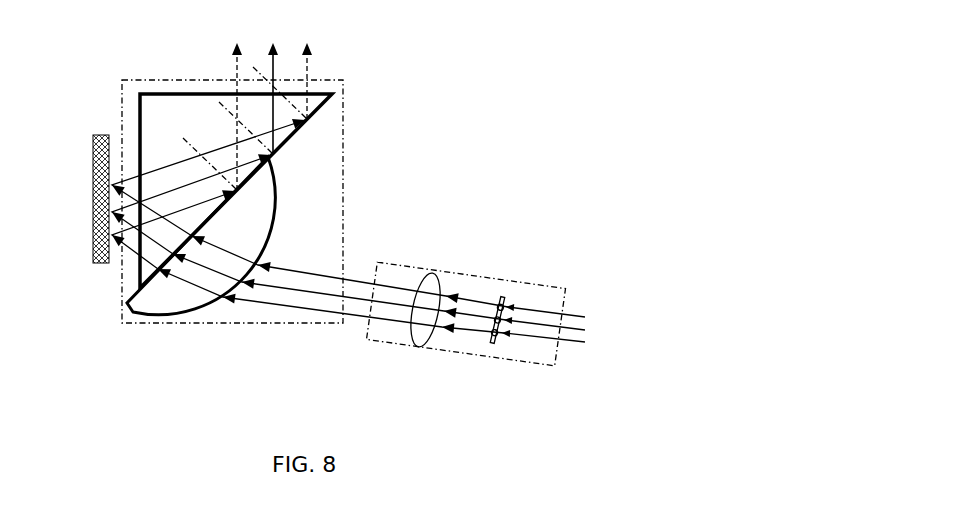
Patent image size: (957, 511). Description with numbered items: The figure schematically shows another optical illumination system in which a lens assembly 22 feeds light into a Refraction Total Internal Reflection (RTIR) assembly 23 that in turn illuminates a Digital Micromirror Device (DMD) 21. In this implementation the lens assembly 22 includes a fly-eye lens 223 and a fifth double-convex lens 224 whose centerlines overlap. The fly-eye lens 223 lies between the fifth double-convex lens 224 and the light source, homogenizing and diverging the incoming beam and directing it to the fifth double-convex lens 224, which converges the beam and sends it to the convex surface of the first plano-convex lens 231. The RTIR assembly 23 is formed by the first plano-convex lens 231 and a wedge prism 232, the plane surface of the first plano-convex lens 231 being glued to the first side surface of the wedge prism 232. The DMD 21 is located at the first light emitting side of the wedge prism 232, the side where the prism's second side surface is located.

The Digital Micromirror Device (DMD) 21 is at (93, 237).
The lens assembly 22 is at (462, 272).
The Refraction Total Internal Reflection (RTIR) assembly 23 is at (343, 202).
The fly-eye lens 223 is at (493, 335).
The fifth double-convex lens 224 is at (415, 340).
The first plano-convex lens 231 is at (127, 304).
The wedge prism 232 is at (138, 267).